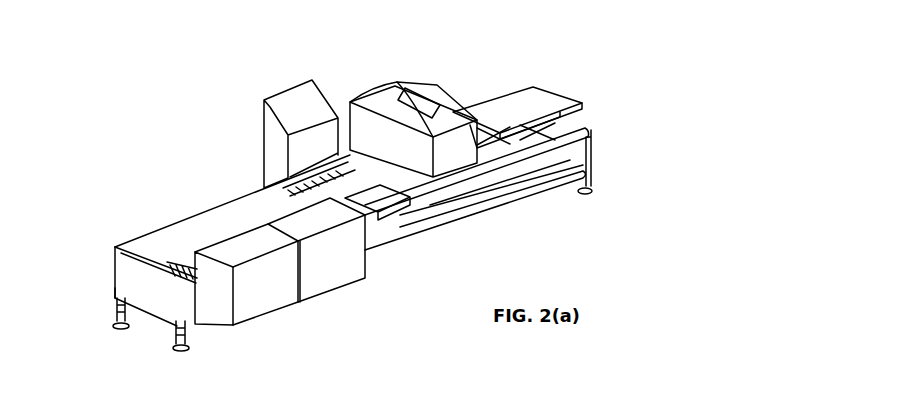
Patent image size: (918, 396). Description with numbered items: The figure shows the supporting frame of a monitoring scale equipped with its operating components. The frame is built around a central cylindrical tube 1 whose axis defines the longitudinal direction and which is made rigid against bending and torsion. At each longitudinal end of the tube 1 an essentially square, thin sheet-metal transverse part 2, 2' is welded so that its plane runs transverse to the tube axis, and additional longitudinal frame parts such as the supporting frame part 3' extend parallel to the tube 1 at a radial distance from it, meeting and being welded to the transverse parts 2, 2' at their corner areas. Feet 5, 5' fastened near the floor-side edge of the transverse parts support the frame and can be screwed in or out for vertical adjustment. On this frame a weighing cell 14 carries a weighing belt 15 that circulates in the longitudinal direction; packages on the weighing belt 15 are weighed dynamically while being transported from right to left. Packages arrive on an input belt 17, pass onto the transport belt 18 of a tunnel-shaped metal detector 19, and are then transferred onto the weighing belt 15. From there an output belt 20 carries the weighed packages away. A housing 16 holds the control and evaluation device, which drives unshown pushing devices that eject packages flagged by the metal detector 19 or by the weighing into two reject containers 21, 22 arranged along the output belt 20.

The central cylindrical tube 1 is at (477, 185).
The transverse part 2 is at (136, 325).
The transverse part 2' is at (607, 162).
The additional supporting frame part 3' is at (538, 186).
The foot 5 is at (163, 352).
The foot 5' is at (91, 323).
The weighing cell 14 is at (383, 205).
The weighing belt 15 is at (320, 187).
The housing 16 is at (266, 122).
The input belt 17 is at (500, 110).
The transport belt 18 is at (410, 150).
The metal detector 19 is at (362, 123).
The output belt 20 is at (200, 230).
The reject container 21 is at (267, 297).
The reject container 22 is at (335, 273).